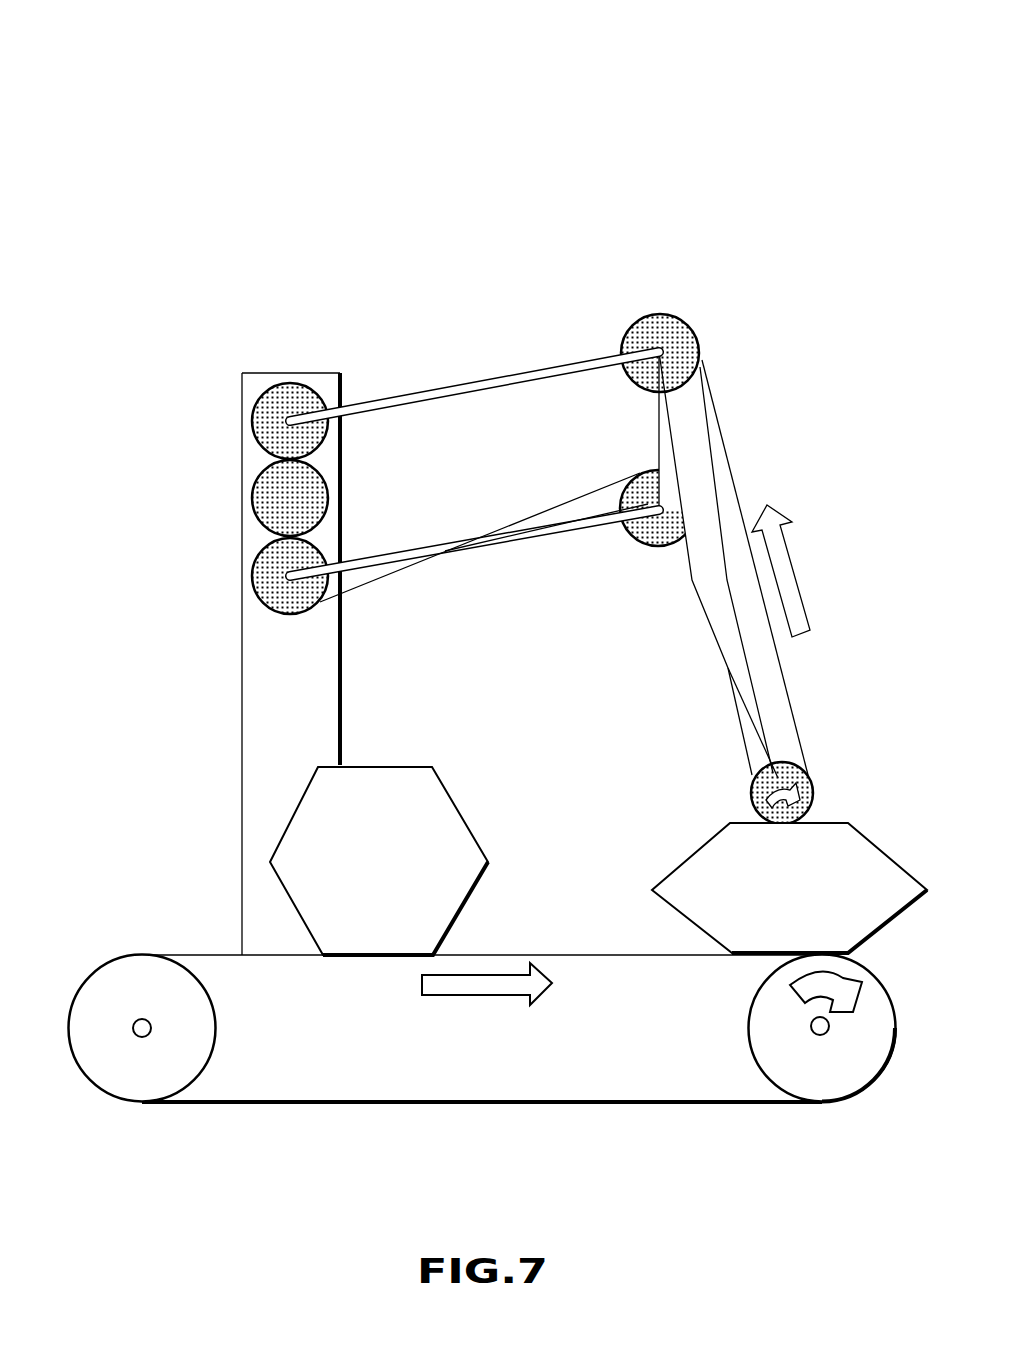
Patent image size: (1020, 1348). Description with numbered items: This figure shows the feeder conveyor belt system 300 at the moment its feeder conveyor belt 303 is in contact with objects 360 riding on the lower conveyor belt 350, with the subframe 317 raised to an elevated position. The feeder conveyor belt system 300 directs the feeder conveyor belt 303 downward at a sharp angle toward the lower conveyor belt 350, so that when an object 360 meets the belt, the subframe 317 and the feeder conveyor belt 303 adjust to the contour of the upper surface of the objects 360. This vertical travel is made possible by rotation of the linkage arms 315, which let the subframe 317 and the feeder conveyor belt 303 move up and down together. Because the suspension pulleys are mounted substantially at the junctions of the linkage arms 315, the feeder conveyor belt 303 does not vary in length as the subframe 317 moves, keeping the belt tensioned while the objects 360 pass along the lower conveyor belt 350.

The feeder conveyor belt system 300 is at (509, 52).
The feeder conveyor belt 303 is at (722, 432).
The linkage arms 315 is at (437, 400).
The subframe 317 is at (700, 570).
The lower conveyor belt 350 is at (205, 955).
The object 360 is at (400, 765).